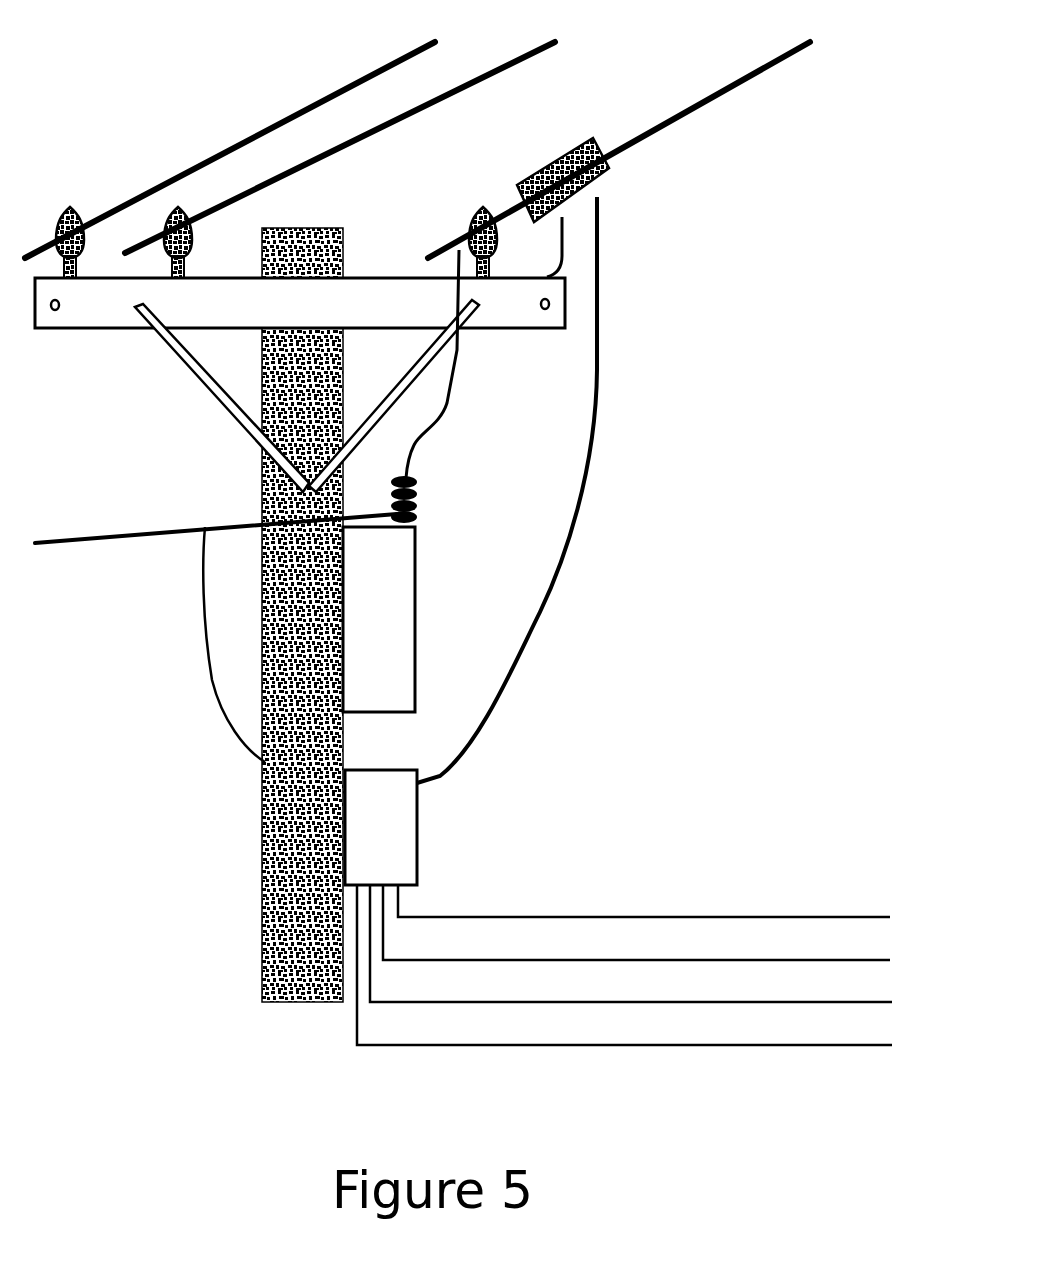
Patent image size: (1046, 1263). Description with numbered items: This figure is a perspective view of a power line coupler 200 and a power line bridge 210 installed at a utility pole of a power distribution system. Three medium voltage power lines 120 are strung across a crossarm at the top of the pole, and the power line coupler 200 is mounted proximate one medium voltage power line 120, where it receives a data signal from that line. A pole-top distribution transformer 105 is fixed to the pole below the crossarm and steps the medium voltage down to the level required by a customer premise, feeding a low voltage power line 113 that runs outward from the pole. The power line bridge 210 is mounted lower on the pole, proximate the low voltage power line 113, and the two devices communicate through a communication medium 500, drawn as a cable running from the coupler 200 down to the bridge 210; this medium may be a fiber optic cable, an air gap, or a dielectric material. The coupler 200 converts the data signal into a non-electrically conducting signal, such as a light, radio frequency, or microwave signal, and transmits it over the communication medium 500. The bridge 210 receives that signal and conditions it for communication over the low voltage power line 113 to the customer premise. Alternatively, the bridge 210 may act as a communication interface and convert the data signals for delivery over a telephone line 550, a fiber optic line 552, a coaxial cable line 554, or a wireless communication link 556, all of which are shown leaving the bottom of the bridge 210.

The medium voltage power line 120 is at (655, 128).
The power line coupler 200 is at (622, 182).
The communication medium 500 is at (593, 443).
The low voltage power line 113 is at (180, 530).
The distribution transformer 105 is at (418, 583).
The power line bridge 210 is at (428, 817).
The telephone line 550 is at (644, 901).
The fiber optic line 552 is at (636, 922).
The coaxial cable line 554 is at (631, 943).
The wireless communication link 556 is at (631, 965).